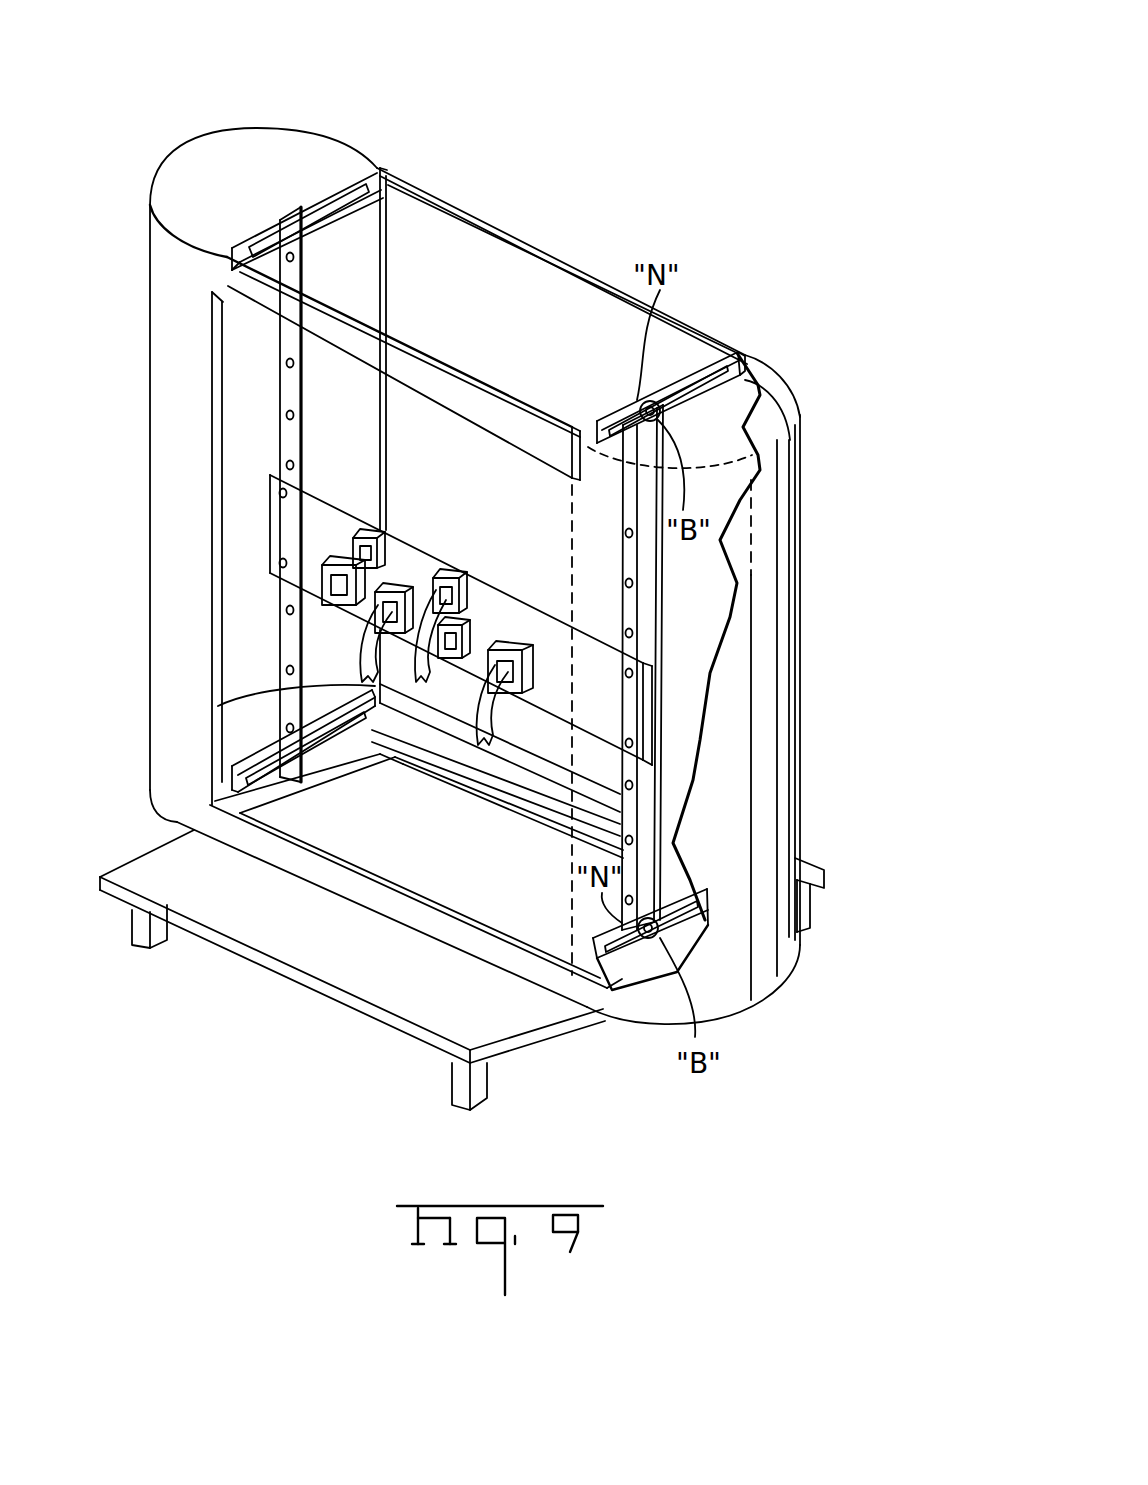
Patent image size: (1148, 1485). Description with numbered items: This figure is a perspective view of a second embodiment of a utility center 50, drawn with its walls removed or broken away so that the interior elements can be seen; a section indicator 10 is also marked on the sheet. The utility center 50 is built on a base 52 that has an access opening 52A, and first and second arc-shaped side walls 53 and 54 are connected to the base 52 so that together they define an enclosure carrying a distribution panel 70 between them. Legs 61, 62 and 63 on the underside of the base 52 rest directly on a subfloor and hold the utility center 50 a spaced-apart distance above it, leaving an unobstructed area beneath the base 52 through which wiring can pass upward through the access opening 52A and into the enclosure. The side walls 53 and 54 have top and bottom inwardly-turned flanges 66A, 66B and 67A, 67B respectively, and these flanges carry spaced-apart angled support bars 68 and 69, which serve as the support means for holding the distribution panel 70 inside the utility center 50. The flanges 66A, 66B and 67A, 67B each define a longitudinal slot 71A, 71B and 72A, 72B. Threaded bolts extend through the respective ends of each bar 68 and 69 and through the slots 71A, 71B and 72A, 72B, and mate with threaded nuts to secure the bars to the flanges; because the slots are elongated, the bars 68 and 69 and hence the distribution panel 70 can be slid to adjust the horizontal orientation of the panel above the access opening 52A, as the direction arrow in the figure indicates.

The section line indicator 10 is at (428, 160).
The utility center 50 is at (128, 157).
The base 52 is at (183, 876).
The access opening 52A is at (450, 787).
The first arc-shaped side wall 53 is at (165, 490).
The second arc-shaped side wall 54 is at (787, 500).
The leg 61 is at (143, 937).
The leg 62 is at (480, 1077).
The leg 63 is at (808, 922).
The top inwardly-turned flange 66A is at (343, 163).
The bottom inwardly-turned flange 66B is at (232, 768).
The top inwardly-turned flange 67A is at (725, 395).
The bottom inwardly-turned flange 67B is at (610, 960).
The angled support bar 68 is at (283, 390).
The angled support bar 69 is at (650, 783).
The distribution panel 70 is at (427, 535).
The longitudinal slot 71A is at (338, 201).
The longitudinal slot 71B is at (266, 742).
The longitudinal slot 72A is at (723, 352).
The longitudinal slot 72B is at (688, 905).